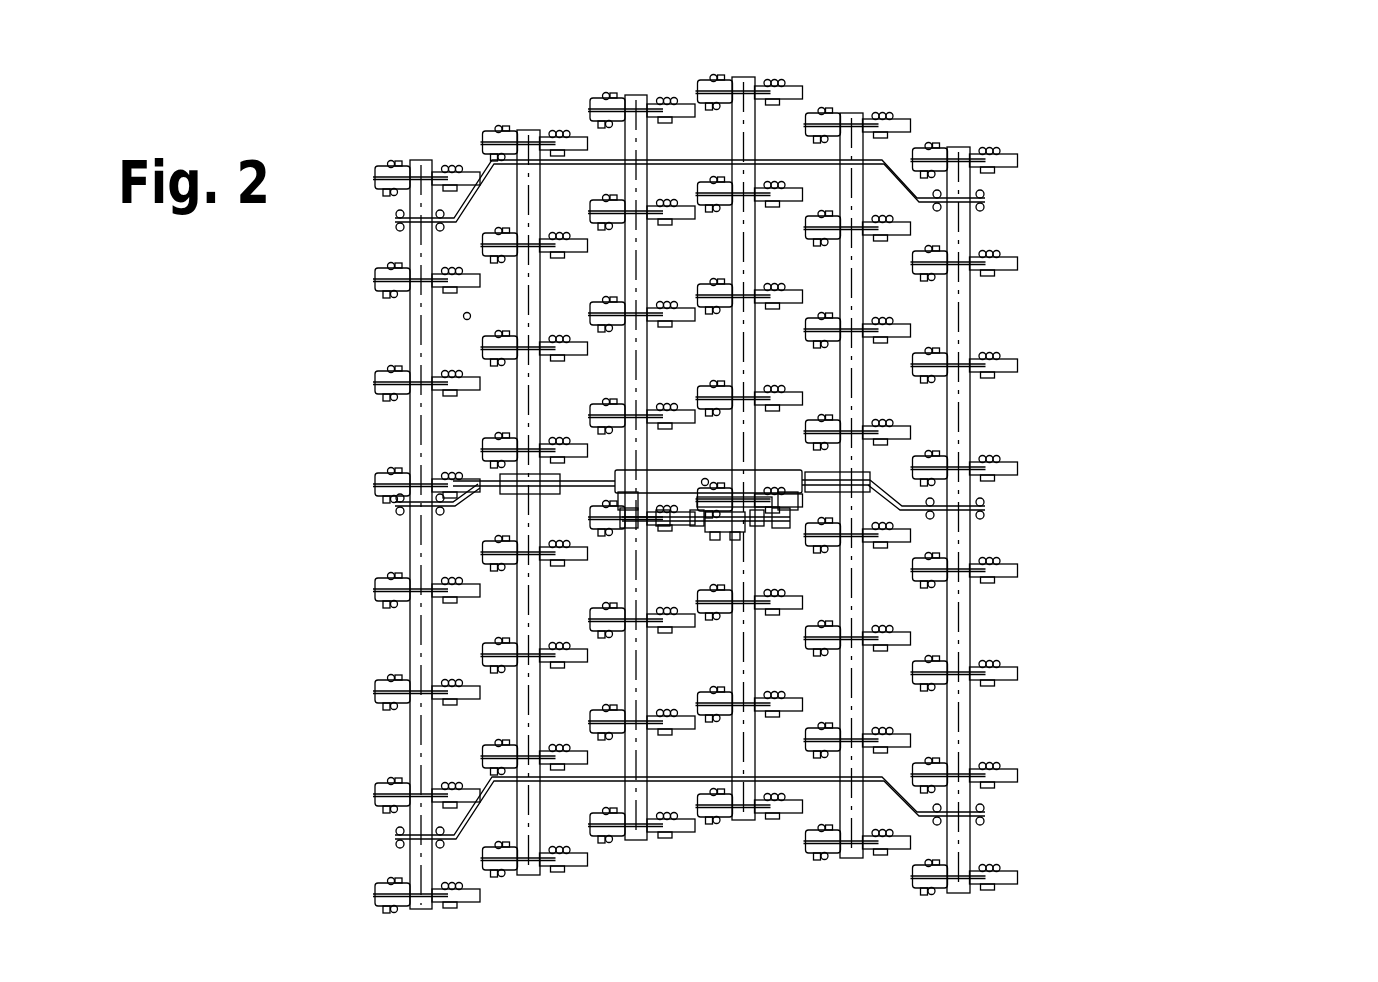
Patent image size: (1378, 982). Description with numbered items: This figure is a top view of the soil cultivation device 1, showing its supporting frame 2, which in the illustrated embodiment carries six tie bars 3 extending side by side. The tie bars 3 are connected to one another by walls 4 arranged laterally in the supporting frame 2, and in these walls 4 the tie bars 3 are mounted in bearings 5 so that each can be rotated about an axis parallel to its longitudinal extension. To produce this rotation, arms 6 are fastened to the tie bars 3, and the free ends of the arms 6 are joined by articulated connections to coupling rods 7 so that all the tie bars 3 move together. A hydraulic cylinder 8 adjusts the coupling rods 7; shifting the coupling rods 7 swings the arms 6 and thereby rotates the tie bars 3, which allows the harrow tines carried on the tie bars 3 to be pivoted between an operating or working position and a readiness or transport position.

The soil cultivation device 1 is at (1200, 286).
The supporting frame 2 is at (462, 318).
The tie bar 3 is at (960, 620).
The wall 4 is at (893, 173).
The bearing 5 is at (985, 200).
The arm 6 is at (985, 507).
The coupling rod 7 is at (920, 496).
The hydraulic cylinder 8 is at (706, 484).